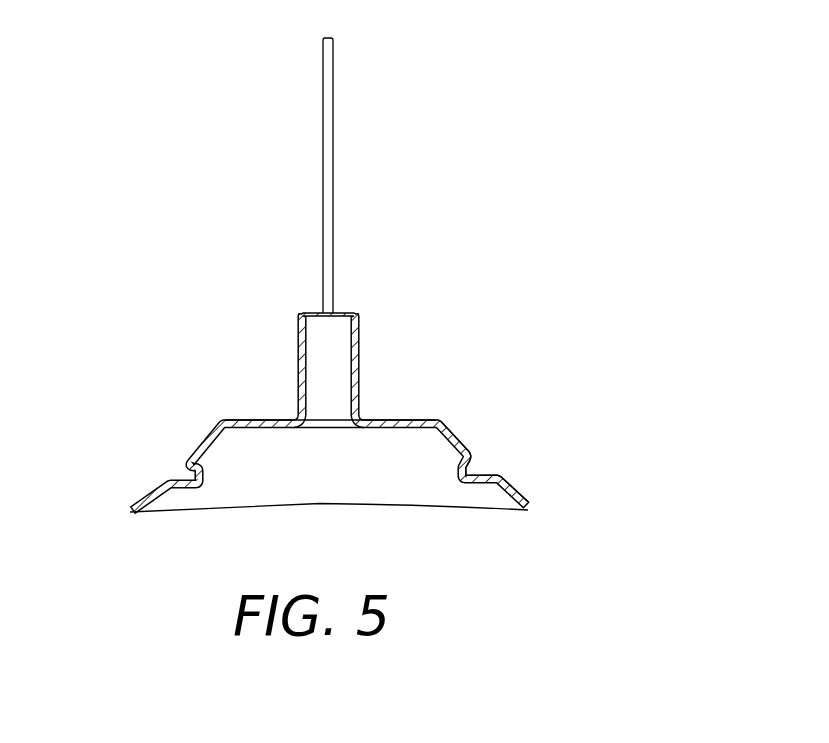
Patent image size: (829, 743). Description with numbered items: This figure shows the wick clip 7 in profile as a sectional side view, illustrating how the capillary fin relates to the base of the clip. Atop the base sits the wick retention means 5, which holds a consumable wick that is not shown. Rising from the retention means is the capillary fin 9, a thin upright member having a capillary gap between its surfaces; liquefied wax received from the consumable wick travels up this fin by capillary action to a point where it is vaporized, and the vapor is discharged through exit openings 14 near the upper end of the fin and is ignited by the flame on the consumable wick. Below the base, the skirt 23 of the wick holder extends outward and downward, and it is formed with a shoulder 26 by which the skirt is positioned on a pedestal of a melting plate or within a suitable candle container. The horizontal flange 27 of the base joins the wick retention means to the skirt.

The cap / socket body 5 is at (358, 333).
The probe assembly 7 is at (354, 300).
The rod / shaft 9 is at (333, 210).
The rod tip 14 is at (340, 52).
The bottom surface / membrane 23 is at (453, 498).
The hook lip / snap edge 26 is at (491, 461).
The flange 27 is at (405, 416).